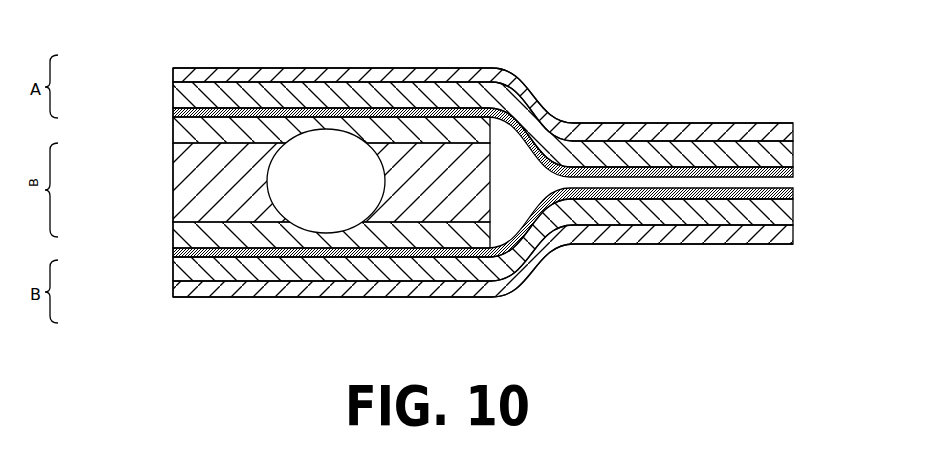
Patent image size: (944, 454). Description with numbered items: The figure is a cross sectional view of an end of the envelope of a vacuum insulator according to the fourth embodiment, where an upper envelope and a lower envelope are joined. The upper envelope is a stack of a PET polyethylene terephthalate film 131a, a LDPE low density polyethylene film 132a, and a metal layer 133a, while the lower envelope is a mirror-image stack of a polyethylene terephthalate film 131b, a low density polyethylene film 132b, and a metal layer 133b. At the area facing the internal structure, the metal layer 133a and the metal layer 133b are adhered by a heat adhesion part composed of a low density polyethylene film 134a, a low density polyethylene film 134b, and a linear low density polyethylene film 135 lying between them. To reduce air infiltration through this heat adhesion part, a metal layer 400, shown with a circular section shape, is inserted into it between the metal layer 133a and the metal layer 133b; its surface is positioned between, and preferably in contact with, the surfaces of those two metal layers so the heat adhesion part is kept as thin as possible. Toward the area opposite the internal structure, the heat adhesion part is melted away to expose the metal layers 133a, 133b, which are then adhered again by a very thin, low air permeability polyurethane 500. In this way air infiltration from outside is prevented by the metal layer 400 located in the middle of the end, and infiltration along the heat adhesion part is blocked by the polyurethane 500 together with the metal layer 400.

The PET polyethylene terephthalate film 131a is at (173, 71).
The LDPE low density polyethylene film 132a is at (173, 95).
The metal layer 133a is at (173, 112).
The low density polyethylene film LDPE 134a is at (173, 129).
The linear low density polyethylene film LLDPE 135 is at (173, 191).
The low density polyethylene film LDPE 134b is at (173, 231).
The metal layer 133b is at (173, 252).
The low density polyethylene film LDPE 132b is at (173, 273).
The polyethylene terephthalate film PET 131b is at (173, 289).
The metal layer 400 is at (366, 68).
The polyurethane 500 is at (793, 182).